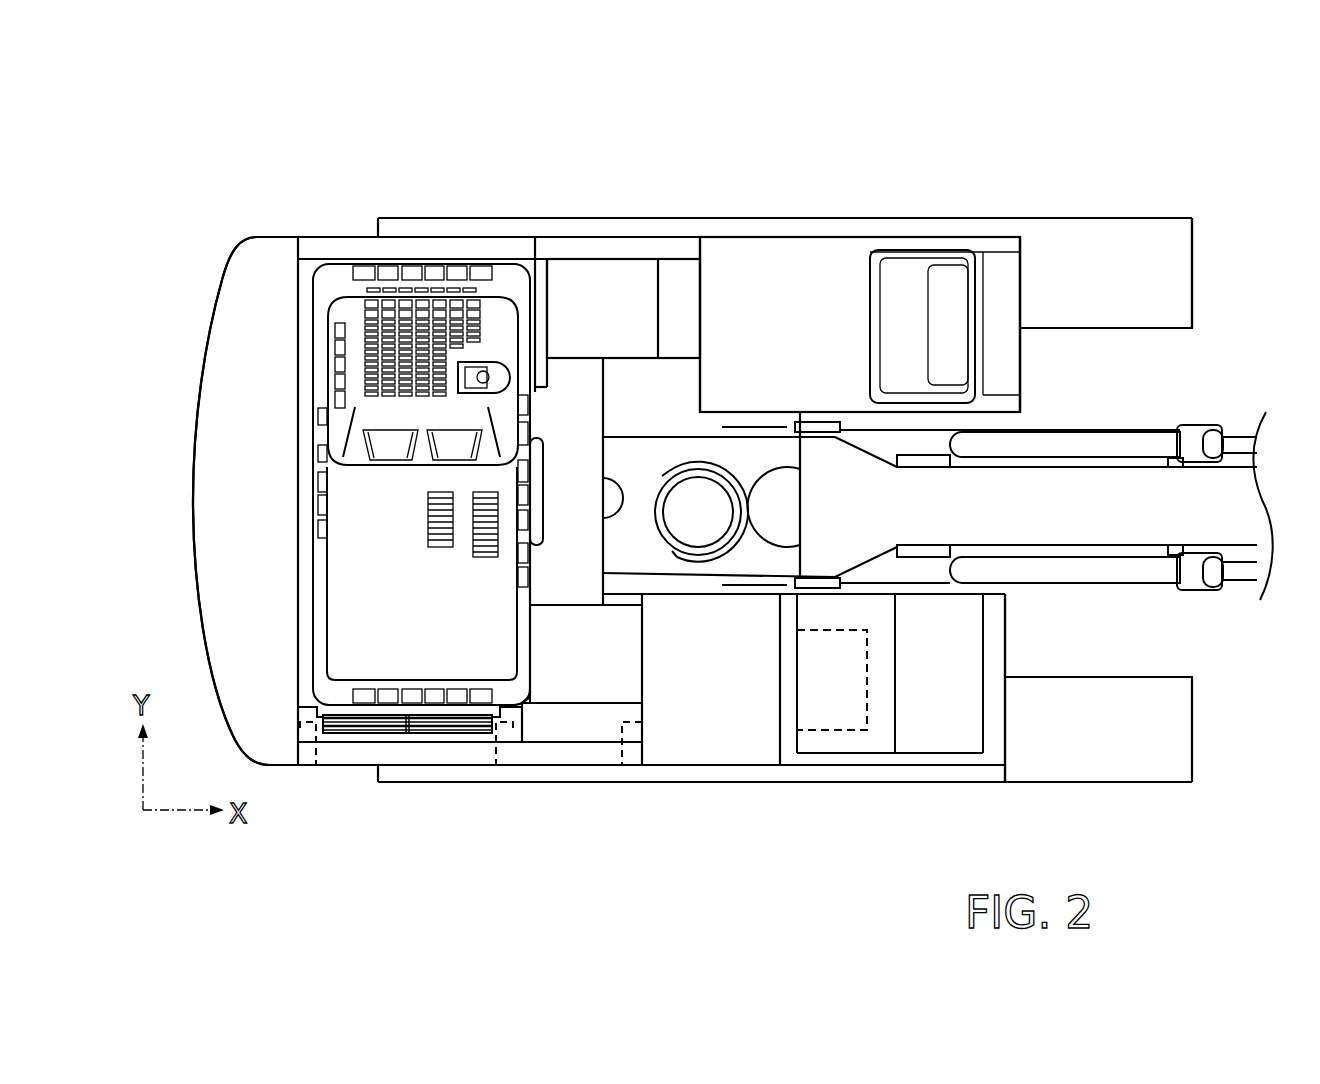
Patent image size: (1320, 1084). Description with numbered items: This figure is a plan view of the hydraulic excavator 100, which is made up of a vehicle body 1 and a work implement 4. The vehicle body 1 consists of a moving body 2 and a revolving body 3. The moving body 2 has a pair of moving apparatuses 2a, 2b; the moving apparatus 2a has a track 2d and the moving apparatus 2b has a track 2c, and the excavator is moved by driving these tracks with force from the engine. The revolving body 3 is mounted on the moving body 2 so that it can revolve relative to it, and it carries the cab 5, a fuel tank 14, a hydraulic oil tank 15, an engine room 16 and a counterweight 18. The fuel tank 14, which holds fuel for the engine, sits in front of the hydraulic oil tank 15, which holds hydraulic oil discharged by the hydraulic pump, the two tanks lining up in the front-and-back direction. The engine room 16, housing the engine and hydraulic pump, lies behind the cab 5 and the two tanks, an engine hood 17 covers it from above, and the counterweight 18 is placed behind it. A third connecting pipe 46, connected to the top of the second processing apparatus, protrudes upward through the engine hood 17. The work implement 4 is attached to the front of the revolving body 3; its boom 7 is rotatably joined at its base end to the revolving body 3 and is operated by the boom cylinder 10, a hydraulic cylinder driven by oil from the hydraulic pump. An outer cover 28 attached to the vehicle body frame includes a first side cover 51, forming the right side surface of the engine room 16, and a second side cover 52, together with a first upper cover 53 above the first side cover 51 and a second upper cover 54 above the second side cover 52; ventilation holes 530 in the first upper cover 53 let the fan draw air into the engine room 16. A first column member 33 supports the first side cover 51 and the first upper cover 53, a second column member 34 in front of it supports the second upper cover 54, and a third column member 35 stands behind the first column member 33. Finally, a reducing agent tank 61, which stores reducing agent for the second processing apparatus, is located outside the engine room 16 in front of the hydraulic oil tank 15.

The hydraulic excavator 100 is at (984, 165).
The vehicle body 1 is at (738, 182).
The moving body 2 is at (1143, 212).
The moving apparatus 2a is at (1176, 741).
The moving apparatus 2b is at (1180, 263).
The track 2c is at (1063, 248).
The track 2d is at (1077, 700).
The revolving body 3 is at (595, 234).
The work implement 4 is at (1224, 407).
The cab 5 is at (905, 275).
The boom 7 is at (1132, 500).
The boom cylinder 10 is at (1082, 438).
The fuel tank 14 is at (725, 750).
The hydraulic oil tank 15 is at (583, 687).
The engine room 16 is at (326, 218).
The engine hood 17 is at (388, 560).
The counterweight 18 is at (260, 235).
The outer cover 28 is at (503, 832).
The first column member 33 is at (527, 727).
The second column member 34 is at (622, 755).
The third column member 35 is at (327, 767).
The third connecting pipe 46 is at (492, 367).
The first side cover 51 is at (428, 757).
The second side cover 52 is at (537, 758).
The first upper cover 53 is at (343, 737).
The ventilation holes 530 is at (358, 734).
The second upper cover 54 is at (642, 713).
The reducing agent tank 61 is at (843, 732).